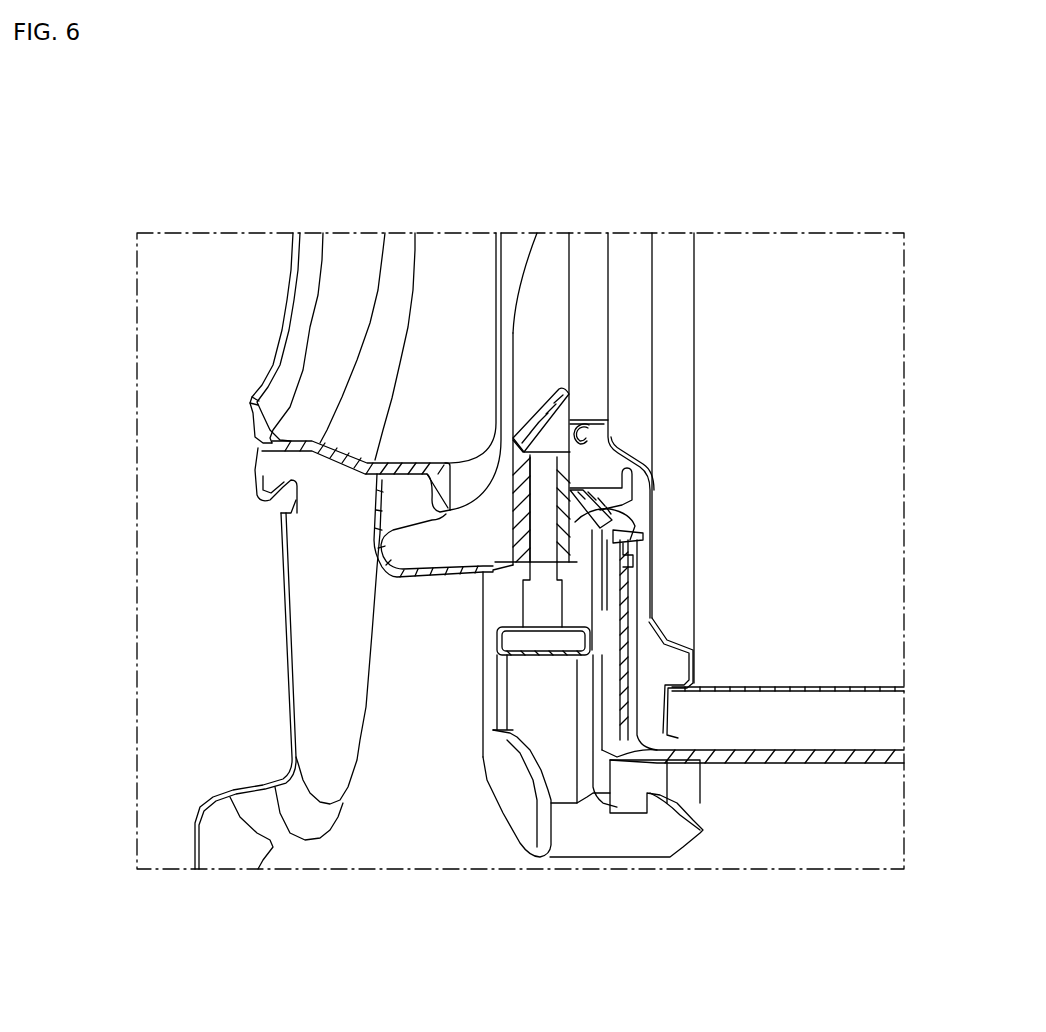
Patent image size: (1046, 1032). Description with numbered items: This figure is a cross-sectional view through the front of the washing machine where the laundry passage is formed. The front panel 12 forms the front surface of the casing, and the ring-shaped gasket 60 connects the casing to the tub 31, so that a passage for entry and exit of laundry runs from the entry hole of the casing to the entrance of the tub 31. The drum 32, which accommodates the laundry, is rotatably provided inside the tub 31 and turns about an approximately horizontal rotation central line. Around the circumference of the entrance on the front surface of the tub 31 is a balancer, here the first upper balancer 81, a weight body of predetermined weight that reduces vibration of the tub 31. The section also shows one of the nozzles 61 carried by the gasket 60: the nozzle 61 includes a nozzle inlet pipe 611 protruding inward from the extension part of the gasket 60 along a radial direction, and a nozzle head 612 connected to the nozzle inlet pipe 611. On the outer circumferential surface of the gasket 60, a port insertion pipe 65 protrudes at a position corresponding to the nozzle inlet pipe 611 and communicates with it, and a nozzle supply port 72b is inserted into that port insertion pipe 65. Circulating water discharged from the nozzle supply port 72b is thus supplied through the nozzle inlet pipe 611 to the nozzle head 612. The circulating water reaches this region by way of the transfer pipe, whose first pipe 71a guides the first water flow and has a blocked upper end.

The front panel 12 is at (247, 728).
The gasket 60 is at (357, 487).
The nozzle 61 is at (533, 410).
The nozzle head 612 is at (568, 418).
The nozzle inlet pipe 611 is at (523, 465).
The drum 32 is at (593, 362).
The tub 31 is at (607, 653).
The port insertion pipe 65 is at (522, 602).
The nozzle supply port 72b is at (540, 610).
The first pipe 71a is at (605, 650).
The first upper balancer 81 is at (610, 763).